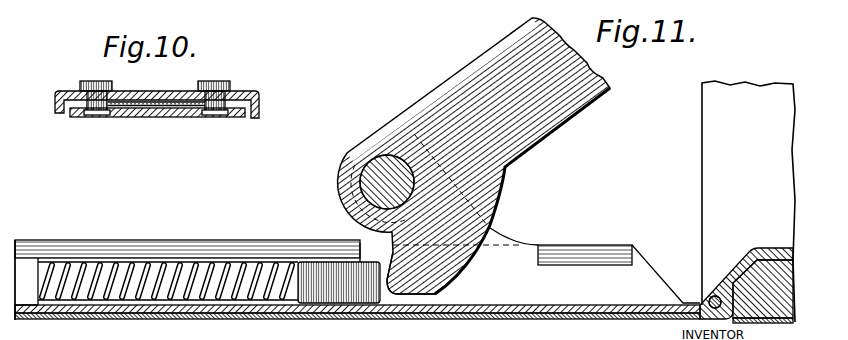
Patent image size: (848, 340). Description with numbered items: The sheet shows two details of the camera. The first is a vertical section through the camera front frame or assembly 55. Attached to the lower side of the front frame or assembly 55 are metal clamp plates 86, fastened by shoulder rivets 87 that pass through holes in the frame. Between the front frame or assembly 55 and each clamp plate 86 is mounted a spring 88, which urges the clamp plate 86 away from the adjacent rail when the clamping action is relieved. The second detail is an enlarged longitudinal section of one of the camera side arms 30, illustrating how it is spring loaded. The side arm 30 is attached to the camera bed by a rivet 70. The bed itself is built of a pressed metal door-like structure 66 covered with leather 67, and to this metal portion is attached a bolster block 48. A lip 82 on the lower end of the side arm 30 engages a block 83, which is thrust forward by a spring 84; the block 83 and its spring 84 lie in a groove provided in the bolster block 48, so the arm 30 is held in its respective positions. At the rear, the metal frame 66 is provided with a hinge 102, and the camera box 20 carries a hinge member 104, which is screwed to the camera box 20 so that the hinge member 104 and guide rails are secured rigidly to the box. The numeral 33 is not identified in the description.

In FIG. 11, the camera box 20 is at (708, 152).
In FIG. 11, the camera side arm 30 is at (562, 112).
In FIG. 11, the lever handle 33 is at (335, 5).
In FIG. 11, the bolster block 48 is at (172, 247).
In FIG. 10, the front frame or assembly 55 is at (259, 103).
In FIG. 11, the pressed metal door-like structure 66 is at (525, 308).
In FIG. 11, the leather 67 is at (82, 315).
In FIG. 11, the rivet 70 is at (377, 172).
In FIG. 11, the lip 82 is at (398, 295).
In FIG. 11, the block 83 is at (330, 268).
In FIG. 11, the spring 84 is at (163, 298).
In FIG. 10, the clamp plate 86 is at (173, 118).
In FIG. 10, the shoulder rivet 87 is at (95, 86).
In FIG. 10, the spring 88 is at (127, 108).
In FIG. 11, the hinge 102 is at (709, 298).
In FIG. 11, the hinge member 104 is at (757, 256).